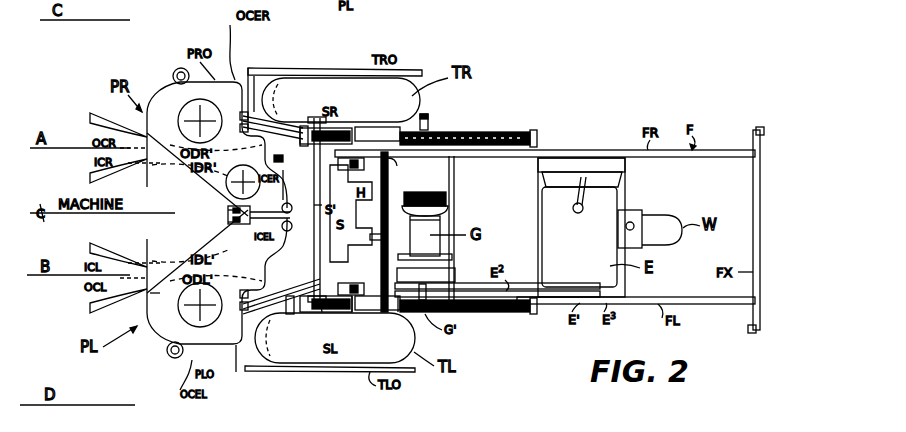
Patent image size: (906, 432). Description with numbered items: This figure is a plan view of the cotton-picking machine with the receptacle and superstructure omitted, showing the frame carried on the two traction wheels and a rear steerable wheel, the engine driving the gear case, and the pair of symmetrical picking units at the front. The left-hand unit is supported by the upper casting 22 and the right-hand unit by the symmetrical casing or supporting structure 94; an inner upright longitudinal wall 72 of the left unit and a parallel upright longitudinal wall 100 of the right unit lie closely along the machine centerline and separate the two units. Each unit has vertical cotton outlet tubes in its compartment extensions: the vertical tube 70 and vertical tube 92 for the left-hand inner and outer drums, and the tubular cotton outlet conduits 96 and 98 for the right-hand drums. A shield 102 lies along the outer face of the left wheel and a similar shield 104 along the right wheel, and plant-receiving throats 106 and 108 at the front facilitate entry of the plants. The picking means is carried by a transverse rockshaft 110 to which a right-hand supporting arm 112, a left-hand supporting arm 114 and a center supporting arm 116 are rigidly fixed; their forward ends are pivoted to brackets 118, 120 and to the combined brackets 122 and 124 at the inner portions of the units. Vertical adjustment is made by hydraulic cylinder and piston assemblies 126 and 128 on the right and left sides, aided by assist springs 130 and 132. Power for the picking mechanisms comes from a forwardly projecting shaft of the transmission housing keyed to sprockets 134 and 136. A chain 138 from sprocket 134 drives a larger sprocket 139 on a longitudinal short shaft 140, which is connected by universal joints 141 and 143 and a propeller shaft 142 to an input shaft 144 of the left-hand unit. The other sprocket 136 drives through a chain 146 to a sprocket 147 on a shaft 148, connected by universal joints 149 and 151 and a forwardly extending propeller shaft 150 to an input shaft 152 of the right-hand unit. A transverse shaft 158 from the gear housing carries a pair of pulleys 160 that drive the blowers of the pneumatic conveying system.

The upper casting 22 is at (165, 323).
The vertical tube 70 is at (295, 237).
The inner upright longitudinal wall 72 is at (232, 221).
The vertical tube 92 is at (174, 360).
The casing or supporting structure 94 is at (173, 107).
The tubular cotton outlet conduit 96 is at (294, 199).
The tubular cotton outlet conduit 98 is at (181, 68).
The upright longitudinal wall 100 is at (228, 213).
The shield 102 is at (305, 372).
The shield 104 is at (262, 68).
The plant-receiving throat 106 is at (90, 118).
The plant-receiving throat 108 is at (88, 308).
The transverse rockshaft 110 is at (346, 228).
The right-hand supporting arm 112 is at (270, 122).
The left-hand supporting arm 114 is at (288, 314).
The center supporting arm 116 is at (256, 183).
The bracket 118 is at (247, 68).
The bracket 120 is at (236, 372).
The bracket 122 is at (228, 208).
The bracket 124 is at (222, 232).
The hydraulic cylinder and piston assembly 126 is at (366, 126).
The hydraulic cylinder and piston assembly 128 is at (335, 338).
The assist spring 130 is at (495, 133).
The assist spring 132 is at (500, 312).
The sprocket 134 is at (425, 238).
The sprocket 136 is at (369, 232).
The chain 138 is at (426, 274).
The sprocket 139 is at (398, 312).
The longitudinal short shaft 140 is at (351, 287).
The universal joint 141 is at (352, 312).
The propeller shaft 142 is at (281, 289).
The universal joint 143 is at (325, 312).
The input shaft 144 is at (262, 296).
The chain 146 is at (388, 175).
The sprocket 147 is at (407, 163).
The shaft 148 is at (351, 162).
The universal joint 149 is at (330, 128).
The propeller shaft 150 is at (298, 185).
The universal joint 151 is at (285, 128).
The input shaft 152 is at (274, 158).
The transverse shaft 158 is at (425, 192).
The pulleys 160 is at (448, 198).